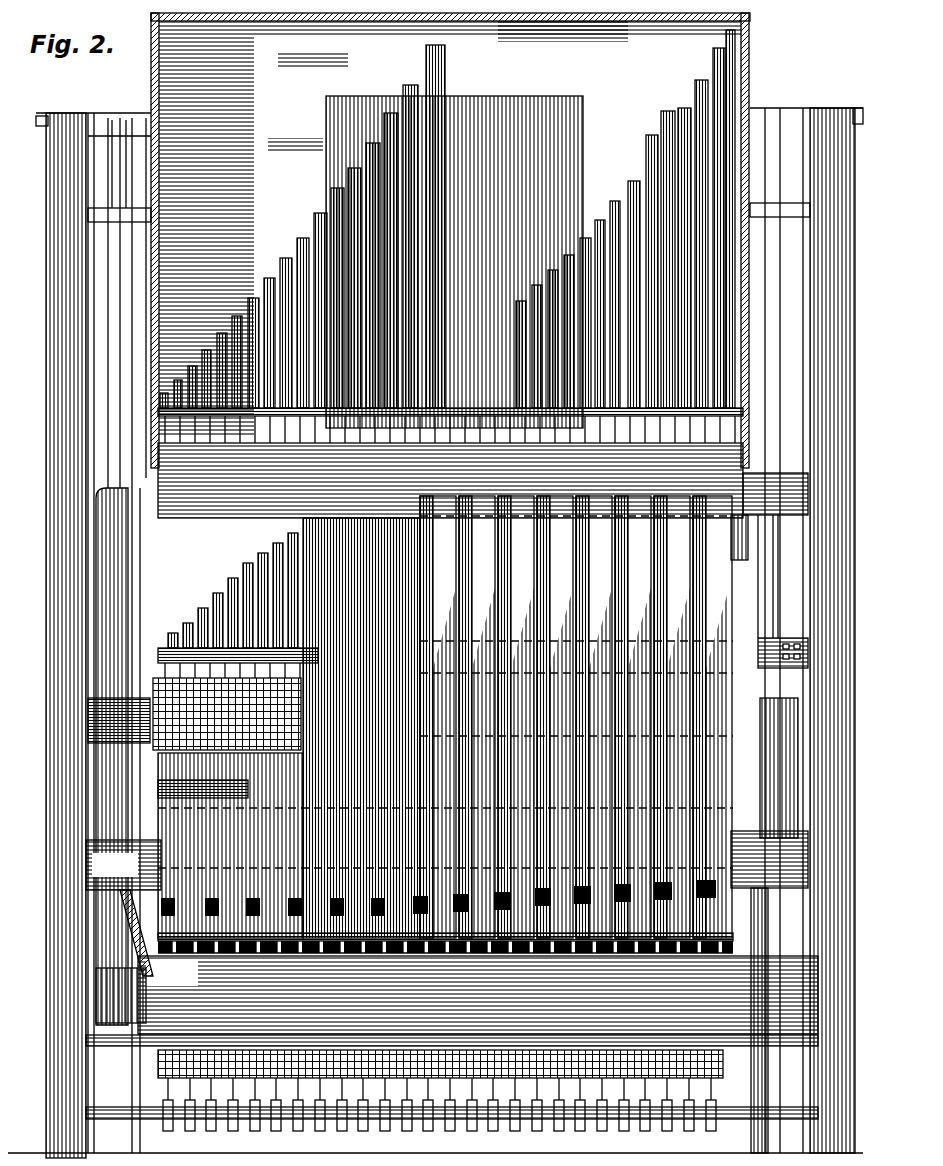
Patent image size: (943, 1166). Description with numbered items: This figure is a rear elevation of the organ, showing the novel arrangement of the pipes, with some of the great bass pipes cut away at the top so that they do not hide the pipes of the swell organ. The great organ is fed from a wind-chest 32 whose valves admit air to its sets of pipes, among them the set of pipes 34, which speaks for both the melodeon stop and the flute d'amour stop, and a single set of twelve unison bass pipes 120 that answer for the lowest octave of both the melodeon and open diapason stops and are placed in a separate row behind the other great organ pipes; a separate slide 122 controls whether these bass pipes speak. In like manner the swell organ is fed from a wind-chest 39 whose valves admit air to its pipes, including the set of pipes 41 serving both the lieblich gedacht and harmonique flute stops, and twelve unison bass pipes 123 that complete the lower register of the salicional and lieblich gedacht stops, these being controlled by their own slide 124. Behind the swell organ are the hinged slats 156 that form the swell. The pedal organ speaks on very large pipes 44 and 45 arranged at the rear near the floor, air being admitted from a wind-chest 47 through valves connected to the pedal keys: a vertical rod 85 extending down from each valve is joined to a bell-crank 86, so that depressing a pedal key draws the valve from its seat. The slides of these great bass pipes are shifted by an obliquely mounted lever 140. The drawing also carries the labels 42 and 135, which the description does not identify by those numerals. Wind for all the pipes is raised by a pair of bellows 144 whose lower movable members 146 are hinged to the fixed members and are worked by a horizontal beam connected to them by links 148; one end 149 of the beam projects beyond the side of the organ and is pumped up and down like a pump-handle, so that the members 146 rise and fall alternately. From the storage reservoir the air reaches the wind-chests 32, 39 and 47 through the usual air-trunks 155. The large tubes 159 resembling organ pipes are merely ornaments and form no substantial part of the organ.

The wind-chest 32 is at (227, 714).
The set of pipes 34 is at (278, 514).
The wind-chest 39 is at (450, 480).
The set of pipes 41 is at (305, 217).
The pallet valve 42 is at (438, 884).
The large pipes 44 is at (436, 942).
The large pipes 45 is at (690, 660).
The wind-chest 47 is at (478, 995).
The vertical rod 85 is at (428, 1088).
The bell-crank 86 is at (212, 1127).
The unison bass pipes 120 is at (400, 520).
The slide 122 is at (119, 720).
The unison bass pipes 123 is at (430, 272).
The slide 124 is at (775, 464).
The stop 135 is at (120, 995).
The lever 140 is at (134, 952).
The bellows 144 is at (160, 1066).
The movable members 146 is at (162, 1090).
The links 148 is at (275, 988).
The end of beam 149 is at (123, 865).
The air-trunks 155 is at (120, 481).
The hinged slats 156 is at (545, 232).
The large tubes 159 is at (135, 120).